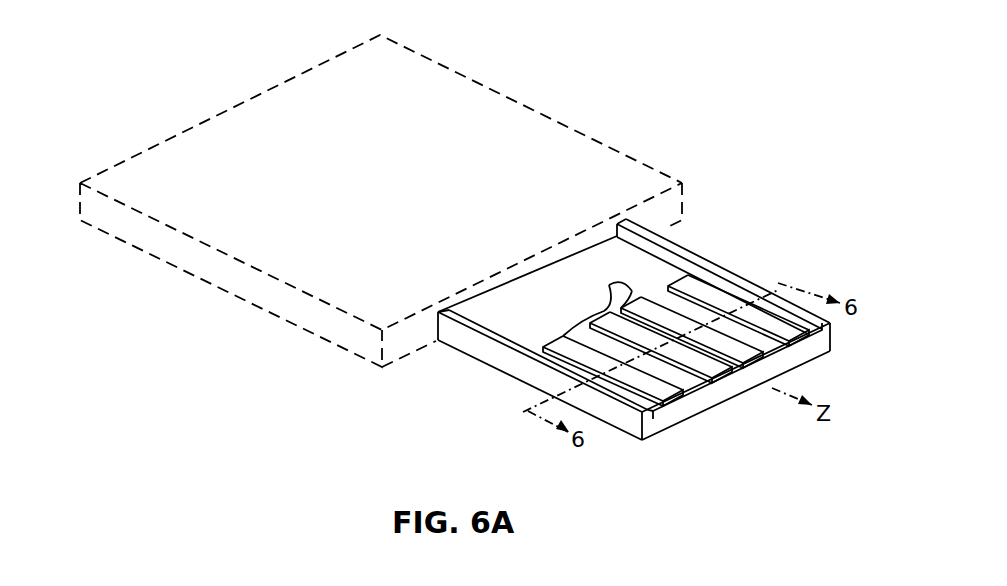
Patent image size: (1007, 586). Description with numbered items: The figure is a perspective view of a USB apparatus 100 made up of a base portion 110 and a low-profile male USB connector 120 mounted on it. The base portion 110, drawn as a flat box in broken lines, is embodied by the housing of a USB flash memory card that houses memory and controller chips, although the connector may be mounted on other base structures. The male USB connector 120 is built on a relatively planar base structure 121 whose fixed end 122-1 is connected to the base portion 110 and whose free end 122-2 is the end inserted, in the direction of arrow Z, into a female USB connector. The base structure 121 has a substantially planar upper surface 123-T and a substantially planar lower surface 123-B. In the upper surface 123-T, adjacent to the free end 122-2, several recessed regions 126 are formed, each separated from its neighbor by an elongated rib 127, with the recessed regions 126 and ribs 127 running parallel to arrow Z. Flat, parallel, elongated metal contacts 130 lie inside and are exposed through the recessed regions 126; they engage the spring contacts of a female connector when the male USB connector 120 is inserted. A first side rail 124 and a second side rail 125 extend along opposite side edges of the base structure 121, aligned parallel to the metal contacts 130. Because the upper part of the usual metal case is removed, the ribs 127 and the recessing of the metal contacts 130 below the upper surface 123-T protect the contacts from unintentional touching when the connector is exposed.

The USB apparatus 100 is at (377, 193).
The base portion 110 is at (542, 113).
The male USB connector 120 is at (608, 294).
The base structure 121 is at (812, 348).
The fixed end 122-1 is at (522, 280).
The free end 122-2 is at (655, 422).
The upper surface 123-T is at (510, 307).
The lower surface 123-B is at (557, 366).
The first side rail 124 is at (494, 369).
The second side rail 125 is at (680, 260).
The recessed region 126 is at (609, 285).
The elongated rib 127 is at (754, 337).
The metal contact 130 is at (689, 350).